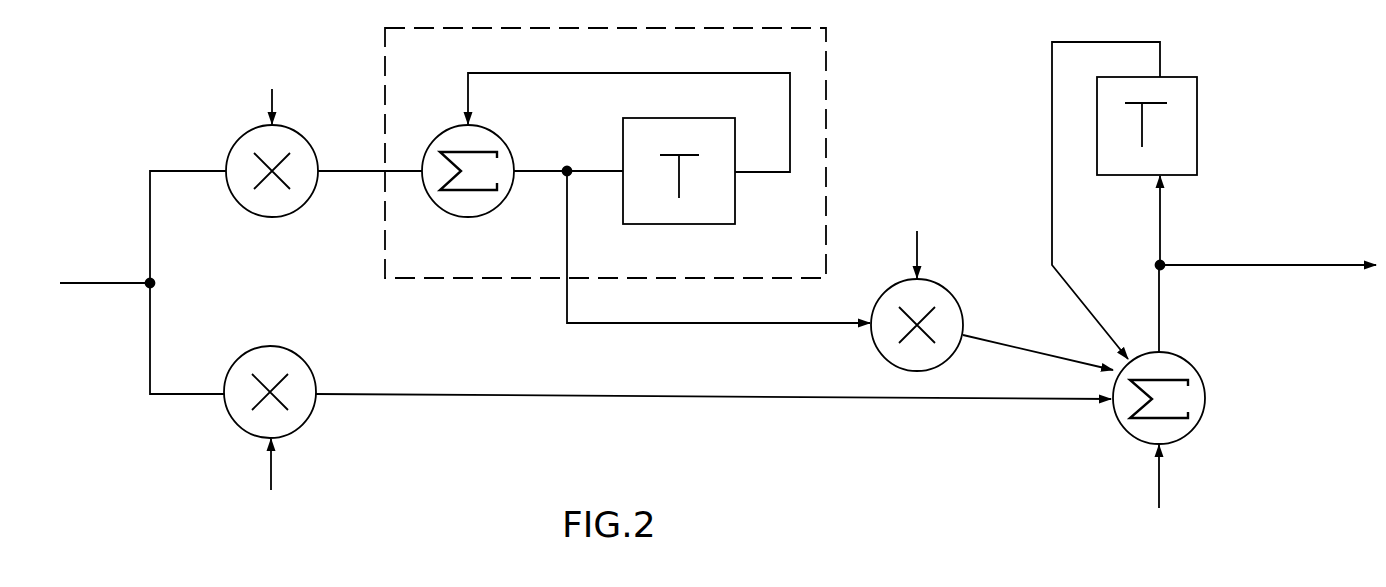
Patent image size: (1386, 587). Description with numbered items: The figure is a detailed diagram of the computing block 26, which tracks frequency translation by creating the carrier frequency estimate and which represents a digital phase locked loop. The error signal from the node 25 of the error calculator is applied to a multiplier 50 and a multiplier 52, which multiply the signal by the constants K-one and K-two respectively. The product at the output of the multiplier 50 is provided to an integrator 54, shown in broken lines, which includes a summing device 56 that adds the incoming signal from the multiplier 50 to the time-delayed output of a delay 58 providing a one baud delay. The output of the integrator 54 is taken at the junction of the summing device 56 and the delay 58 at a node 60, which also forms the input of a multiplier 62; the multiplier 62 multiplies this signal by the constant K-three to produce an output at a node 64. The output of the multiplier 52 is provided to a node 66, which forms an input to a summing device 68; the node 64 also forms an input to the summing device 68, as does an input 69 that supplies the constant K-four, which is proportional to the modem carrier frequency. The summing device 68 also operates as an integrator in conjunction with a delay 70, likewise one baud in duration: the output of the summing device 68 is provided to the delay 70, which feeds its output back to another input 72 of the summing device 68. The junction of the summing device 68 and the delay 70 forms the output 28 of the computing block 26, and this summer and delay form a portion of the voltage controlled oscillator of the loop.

The node 25 is at (93, 285).
The computing block 26 is at (1285, 58).
The output 28 is at (1313, 262).
The multiplier 50 is at (305, 139).
The multiplier 52 is at (286, 349).
The integrator 54 is at (497, 280).
The summing device 56 is at (503, 138).
The delay 58 is at (697, 225).
The node 60 is at (647, 325).
The multiplier 62 is at (873, 343).
The node 64 is at (1011, 342).
The node 66 is at (670, 398).
The summing device 68 is at (1203, 408).
The input 69 is at (1160, 482).
The delay 70 is at (1197, 140).
The input 72 is at (1052, 87).